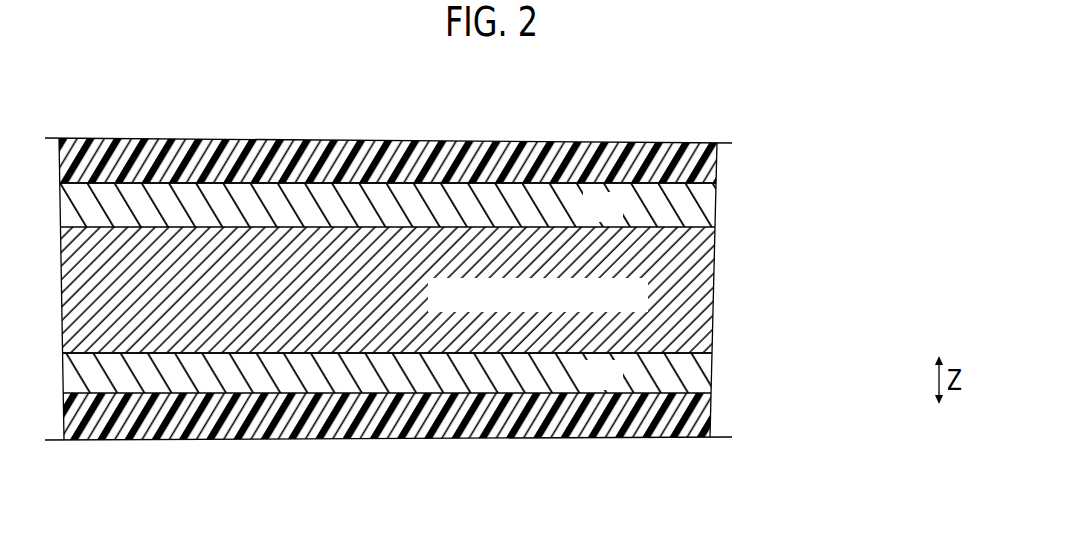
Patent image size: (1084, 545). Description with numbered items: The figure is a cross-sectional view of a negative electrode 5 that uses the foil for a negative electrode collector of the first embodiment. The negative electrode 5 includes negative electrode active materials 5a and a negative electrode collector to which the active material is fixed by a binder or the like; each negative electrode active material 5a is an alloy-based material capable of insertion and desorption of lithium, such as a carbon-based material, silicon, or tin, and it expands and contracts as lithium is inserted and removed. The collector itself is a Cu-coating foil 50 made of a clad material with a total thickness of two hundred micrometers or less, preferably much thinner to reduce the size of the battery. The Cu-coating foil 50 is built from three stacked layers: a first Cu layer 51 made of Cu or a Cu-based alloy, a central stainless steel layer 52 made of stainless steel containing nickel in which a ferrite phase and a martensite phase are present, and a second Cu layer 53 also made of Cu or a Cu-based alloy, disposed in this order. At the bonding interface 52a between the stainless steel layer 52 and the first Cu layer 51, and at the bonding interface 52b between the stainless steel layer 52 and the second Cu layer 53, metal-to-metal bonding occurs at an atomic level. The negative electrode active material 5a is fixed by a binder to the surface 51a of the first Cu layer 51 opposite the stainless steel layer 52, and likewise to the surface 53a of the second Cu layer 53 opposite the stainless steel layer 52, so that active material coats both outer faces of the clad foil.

The negative electrode 5 is at (745, 124).
The negative electrode active material 5a is at (697, 159).
The Cu-coating foil 50 is at (807, 182).
The first Cu layer 51 is at (695, 207).
The surface of the first Cu layer 51a is at (603, 183).
The stainless steel layer 52 is at (695, 295).
The bonding interface 52a is at (459, 226).
The bonding interface 52b is at (458, 353).
The second Cu layer 53 is at (690, 378).
The surface of the second Cu layer 53a is at (607, 393).